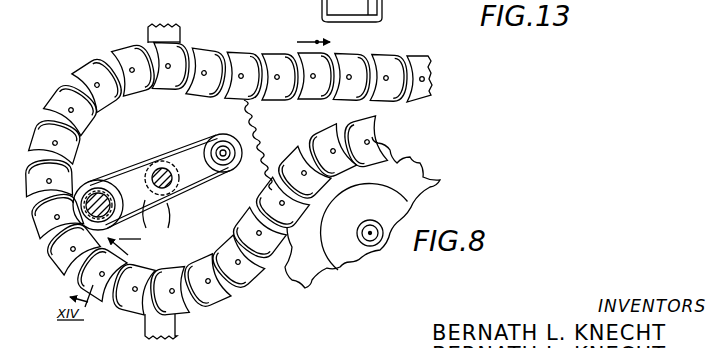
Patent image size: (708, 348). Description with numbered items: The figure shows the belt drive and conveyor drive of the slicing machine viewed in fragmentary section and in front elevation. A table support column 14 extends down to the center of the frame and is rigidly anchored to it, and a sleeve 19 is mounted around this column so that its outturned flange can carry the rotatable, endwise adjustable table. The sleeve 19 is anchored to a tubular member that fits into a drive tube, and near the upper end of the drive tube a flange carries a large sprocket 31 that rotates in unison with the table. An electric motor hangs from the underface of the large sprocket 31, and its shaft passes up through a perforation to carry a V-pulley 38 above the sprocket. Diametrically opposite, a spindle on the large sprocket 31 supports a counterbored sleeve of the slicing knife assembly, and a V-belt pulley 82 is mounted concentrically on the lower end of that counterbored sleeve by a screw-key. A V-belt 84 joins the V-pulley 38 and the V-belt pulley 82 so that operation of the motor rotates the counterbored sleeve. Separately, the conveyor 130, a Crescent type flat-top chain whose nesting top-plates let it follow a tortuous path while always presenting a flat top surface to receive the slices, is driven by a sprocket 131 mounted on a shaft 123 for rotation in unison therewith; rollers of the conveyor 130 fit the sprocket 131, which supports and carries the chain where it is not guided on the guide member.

In FIG. 13, the conveyor 130 is at (239, 35).
In FIG. 8, the sprocket 131 is at (318, 273).
In FIG. 8, the shaft 123 is at (376, 245).
In FIG. 8, the large sprocket 31 is at (260, 133).
In FIG. 8, the V-belt 84 is at (130, 165).
In FIG. 8, the V-belt pulley 82 is at (92, 183).
In FIG. 8, the V-pulley 38 is at (222, 140).
In FIG. 8, the table support column 14 is at (166, 197).
In FIG. 8, the sleeve 19 is at (134, 241).